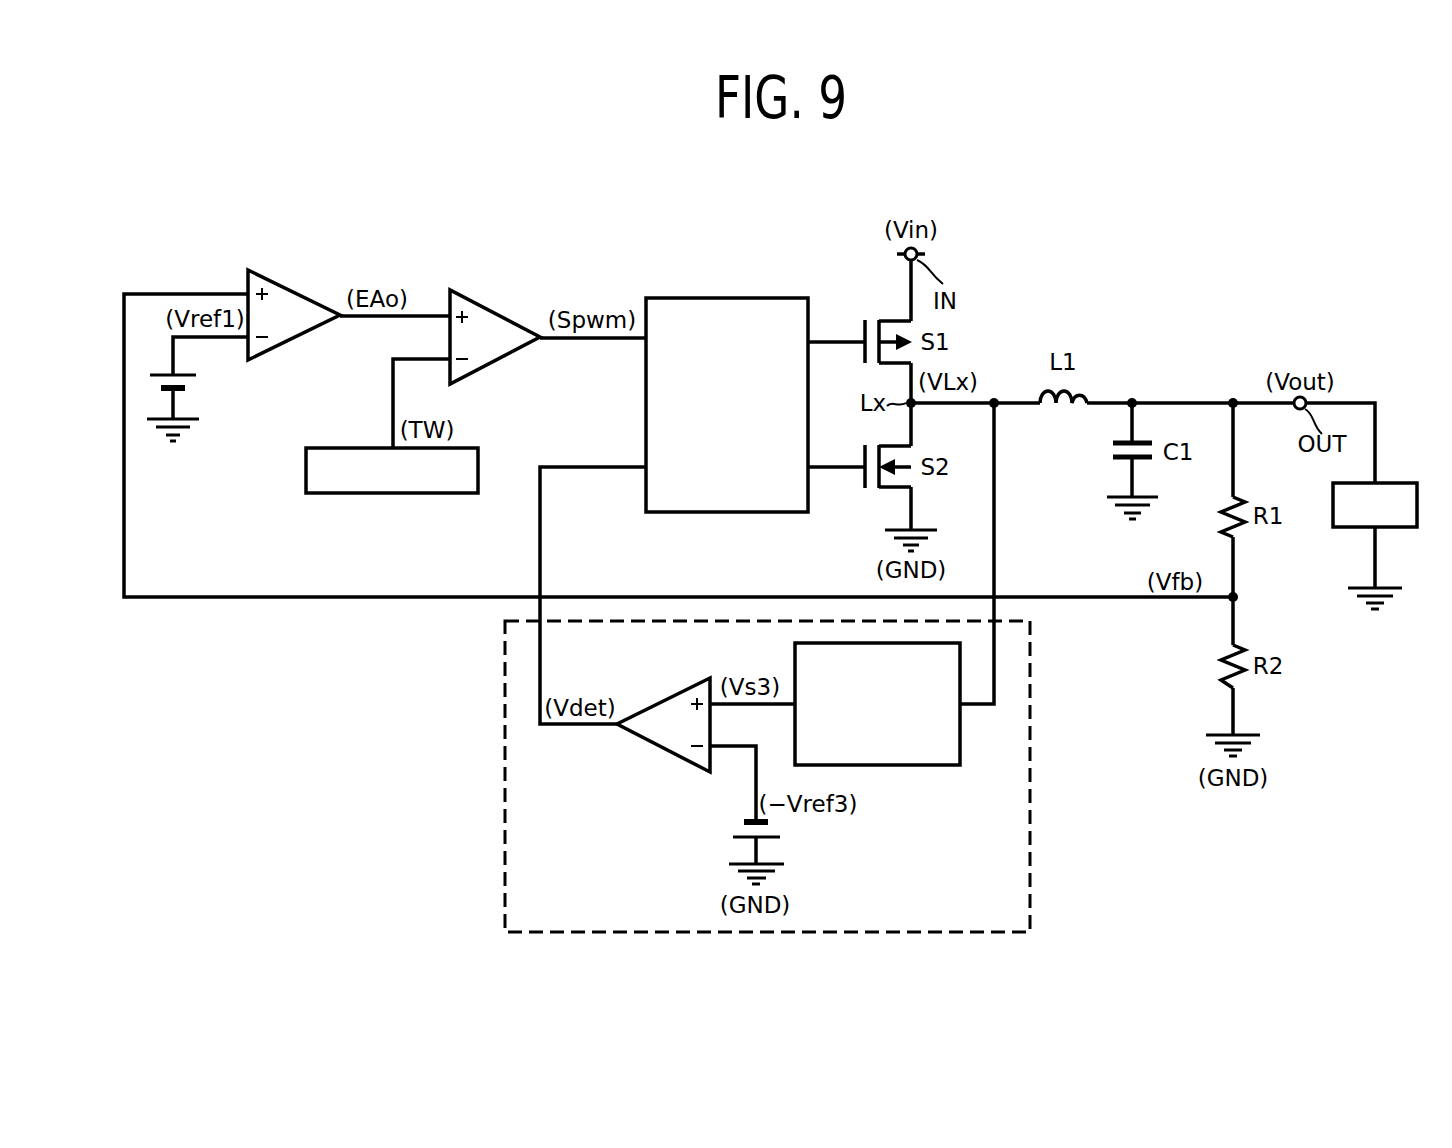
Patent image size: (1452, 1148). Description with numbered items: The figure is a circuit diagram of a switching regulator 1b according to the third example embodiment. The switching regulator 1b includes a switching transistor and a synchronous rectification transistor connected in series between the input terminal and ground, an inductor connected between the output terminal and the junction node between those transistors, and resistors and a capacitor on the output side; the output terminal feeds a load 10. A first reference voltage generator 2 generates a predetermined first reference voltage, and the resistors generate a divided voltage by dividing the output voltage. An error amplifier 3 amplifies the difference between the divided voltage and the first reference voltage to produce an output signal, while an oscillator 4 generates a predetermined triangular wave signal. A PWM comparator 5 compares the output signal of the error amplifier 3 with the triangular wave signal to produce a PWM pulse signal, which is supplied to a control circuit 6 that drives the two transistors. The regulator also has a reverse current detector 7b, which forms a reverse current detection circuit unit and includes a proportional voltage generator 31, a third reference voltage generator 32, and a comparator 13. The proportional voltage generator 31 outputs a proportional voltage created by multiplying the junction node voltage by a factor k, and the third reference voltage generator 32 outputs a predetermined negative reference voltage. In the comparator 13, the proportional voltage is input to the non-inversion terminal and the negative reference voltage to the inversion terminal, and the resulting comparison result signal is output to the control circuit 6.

The switching regulator 1b is at (1074, 264).
The first reference voltage generator 2 is at (212, 390).
The error amplifier 3 is at (276, 283).
The oscillator 4 is at (435, 495).
The PWM comparator 5 is at (482, 302).
The control circuit 6 is at (764, 298).
The reverse current detector 7b is at (478, 806).
The load 10 is at (1407, 483).
The comparator 13 is at (661, 752).
The proportional voltage generator 31 is at (921, 766).
The third reference voltage generator 32 is at (718, 836).